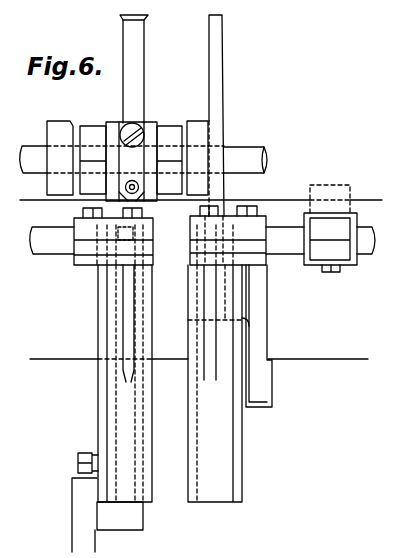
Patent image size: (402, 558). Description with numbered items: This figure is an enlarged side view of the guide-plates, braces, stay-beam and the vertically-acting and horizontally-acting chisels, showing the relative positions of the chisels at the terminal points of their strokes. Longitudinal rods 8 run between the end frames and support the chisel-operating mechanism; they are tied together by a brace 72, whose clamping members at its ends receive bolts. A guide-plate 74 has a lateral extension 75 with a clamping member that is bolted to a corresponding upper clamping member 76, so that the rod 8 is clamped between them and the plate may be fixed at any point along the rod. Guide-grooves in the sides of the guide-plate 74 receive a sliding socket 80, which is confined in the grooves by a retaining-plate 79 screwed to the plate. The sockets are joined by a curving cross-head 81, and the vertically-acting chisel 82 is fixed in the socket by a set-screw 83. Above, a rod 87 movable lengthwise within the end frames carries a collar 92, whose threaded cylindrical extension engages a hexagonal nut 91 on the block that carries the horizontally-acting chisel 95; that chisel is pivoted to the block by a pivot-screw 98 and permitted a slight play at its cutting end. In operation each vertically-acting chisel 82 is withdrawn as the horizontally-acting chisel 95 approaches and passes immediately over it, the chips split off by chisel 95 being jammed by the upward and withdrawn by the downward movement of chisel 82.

The horizontally-acting chisel 95 is at (135, 46).
The vertically-acting chisel 82 is at (216, 41).
The collar 92 is at (60, 121).
The nut 91 is at (131, 160).
The pivot-screw 98 is at (143, 123).
The rod 87 is at (143, 159).
The brace 72 is at (340, 192).
The rod 8 is at (202, 240).
The upper clamping member 76 is at (170, 235).
The lateral extension 75 is at (200, 272).
The retaining-plate 79 is at (98, 418).
The guide-plate 74 is at (171, 383).
The cross-head 81 is at (262, 328).
The set-screw 83 is at (77, 458).
The sliding socket 80 is at (120, 516).